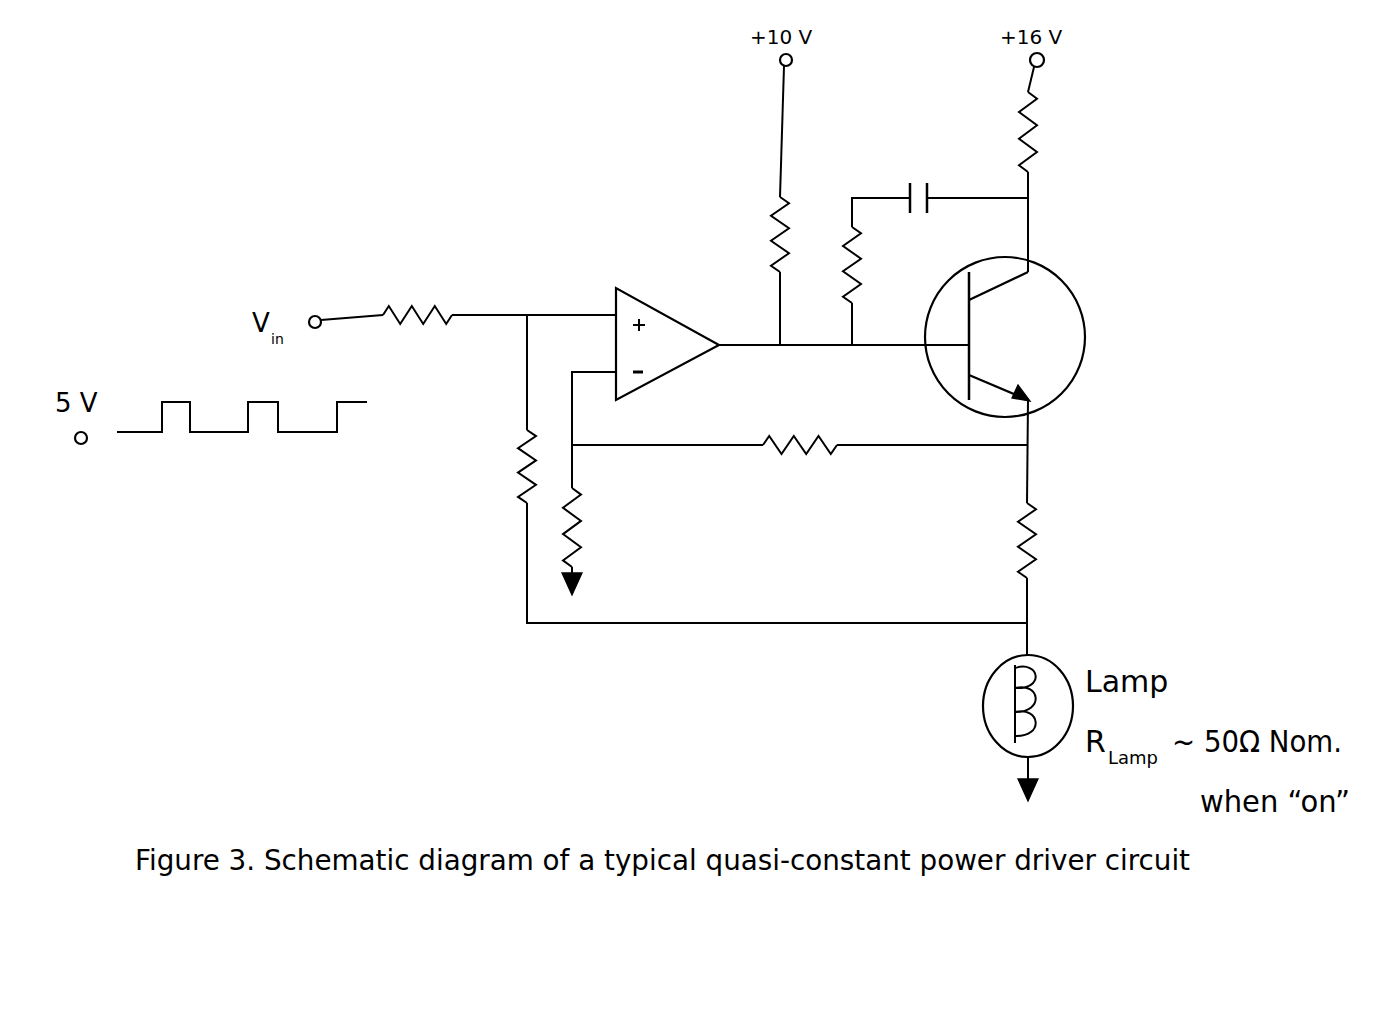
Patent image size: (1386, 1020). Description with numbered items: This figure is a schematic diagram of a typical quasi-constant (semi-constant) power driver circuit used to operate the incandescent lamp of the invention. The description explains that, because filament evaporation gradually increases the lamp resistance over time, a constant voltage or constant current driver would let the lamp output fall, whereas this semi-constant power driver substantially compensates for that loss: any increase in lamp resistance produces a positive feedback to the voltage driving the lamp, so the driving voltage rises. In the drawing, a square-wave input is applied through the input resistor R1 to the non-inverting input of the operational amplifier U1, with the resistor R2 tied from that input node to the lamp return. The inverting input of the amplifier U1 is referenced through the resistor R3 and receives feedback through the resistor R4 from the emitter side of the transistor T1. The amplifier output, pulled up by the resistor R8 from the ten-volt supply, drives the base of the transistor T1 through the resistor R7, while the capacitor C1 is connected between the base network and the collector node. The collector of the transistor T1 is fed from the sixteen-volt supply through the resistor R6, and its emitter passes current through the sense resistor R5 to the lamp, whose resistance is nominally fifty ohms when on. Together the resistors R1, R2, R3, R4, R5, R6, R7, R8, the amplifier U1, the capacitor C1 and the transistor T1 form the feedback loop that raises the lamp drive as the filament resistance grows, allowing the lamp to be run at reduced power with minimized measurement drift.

The input resistor 10K R1 is at (417, 268).
The resistor 1K R2 is at (488, 471).
The resistor 50K R3 is at (600, 541).
The feedback resistor 2.5K R4 is at (800, 490).
The sense resistor 2.5 ohm R5 is at (1064, 545).
The collector resistor 33 ohm R6 is at (1063, 142).
The resistor 100 ohm R7 is at (877, 270).
The pull-up resistor 1K R8 is at (754, 240).
The operational amplifier LM358N U1 is at (652, 310).
The capacitor 0.1 uF C1 is at (918, 164).
The transistor TIP31 T1 is at (1042, 337).